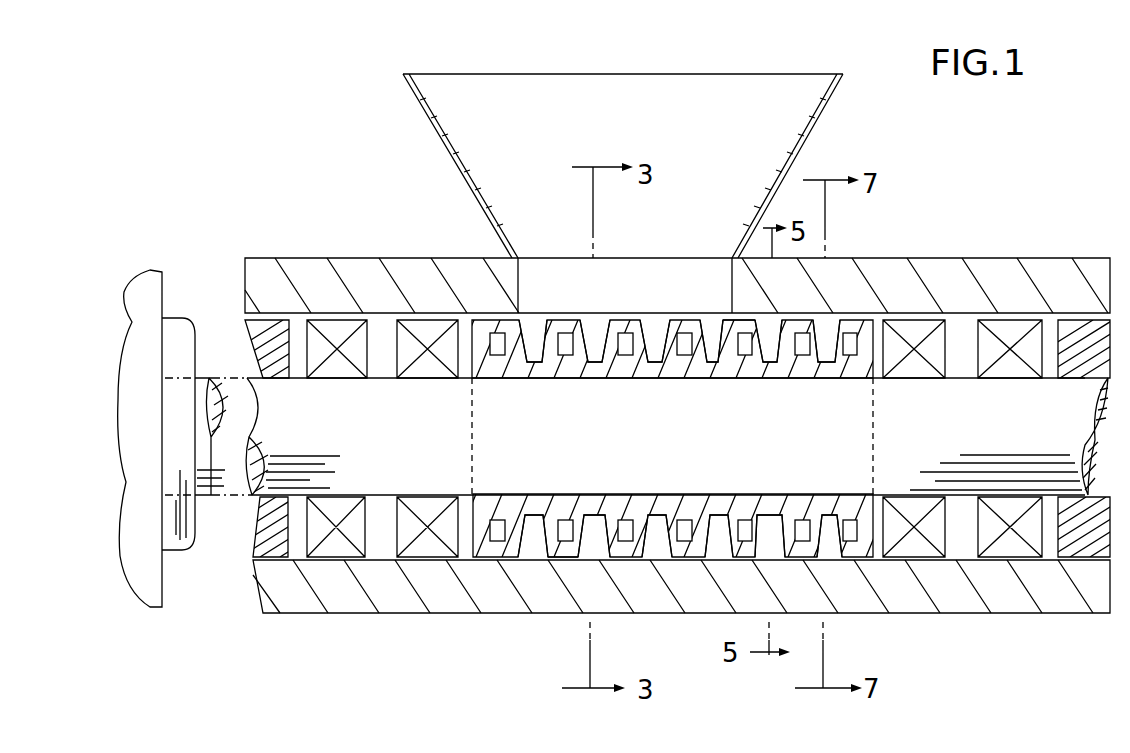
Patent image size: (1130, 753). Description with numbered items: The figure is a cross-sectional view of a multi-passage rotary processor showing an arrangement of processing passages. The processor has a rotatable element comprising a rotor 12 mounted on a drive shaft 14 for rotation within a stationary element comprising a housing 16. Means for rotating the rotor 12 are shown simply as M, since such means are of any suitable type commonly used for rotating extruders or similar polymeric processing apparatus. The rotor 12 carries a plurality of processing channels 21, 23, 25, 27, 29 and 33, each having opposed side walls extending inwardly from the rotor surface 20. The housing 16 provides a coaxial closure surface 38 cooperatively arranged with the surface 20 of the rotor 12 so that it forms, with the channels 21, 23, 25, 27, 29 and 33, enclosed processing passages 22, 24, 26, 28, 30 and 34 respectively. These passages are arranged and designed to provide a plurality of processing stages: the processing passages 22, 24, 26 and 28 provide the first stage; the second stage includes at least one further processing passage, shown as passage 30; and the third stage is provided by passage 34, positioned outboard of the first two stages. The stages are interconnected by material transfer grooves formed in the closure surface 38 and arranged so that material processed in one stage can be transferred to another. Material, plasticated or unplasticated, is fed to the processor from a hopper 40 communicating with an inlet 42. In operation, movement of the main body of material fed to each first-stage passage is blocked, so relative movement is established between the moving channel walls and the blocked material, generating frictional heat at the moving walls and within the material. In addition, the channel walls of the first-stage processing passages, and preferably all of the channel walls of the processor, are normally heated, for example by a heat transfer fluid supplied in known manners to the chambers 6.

The means for rotating rotor M is at (156, 292).
The drive shaft 14 is at (392, 437).
The housing 16 is at (405, 604).
The rotor 12 is at (607, 500).
The rotor surface 20 is at (682, 318).
The hopper 40 is at (463, 175).
The inlet 42 is at (527, 280).
The processing channel 21 is at (531, 520).
The processing passage 22 is at (533, 328).
The processing channel 23 is at (587, 551).
The processing passage 24 is at (598, 324).
The processing channel 25 is at (652, 520).
The processing passage 26 is at (650, 324).
The processing channel 27 is at (720, 522).
The processing passage 28 is at (713, 330).
The processing channel 29 is at (768, 523).
The processing passage 30 is at (775, 350).
The processing channel 33 is at (823, 525).
The processing passage 34 is at (830, 342).
The closure surface 38 is at (773, 314).
The chambers 6 is at (558, 546).